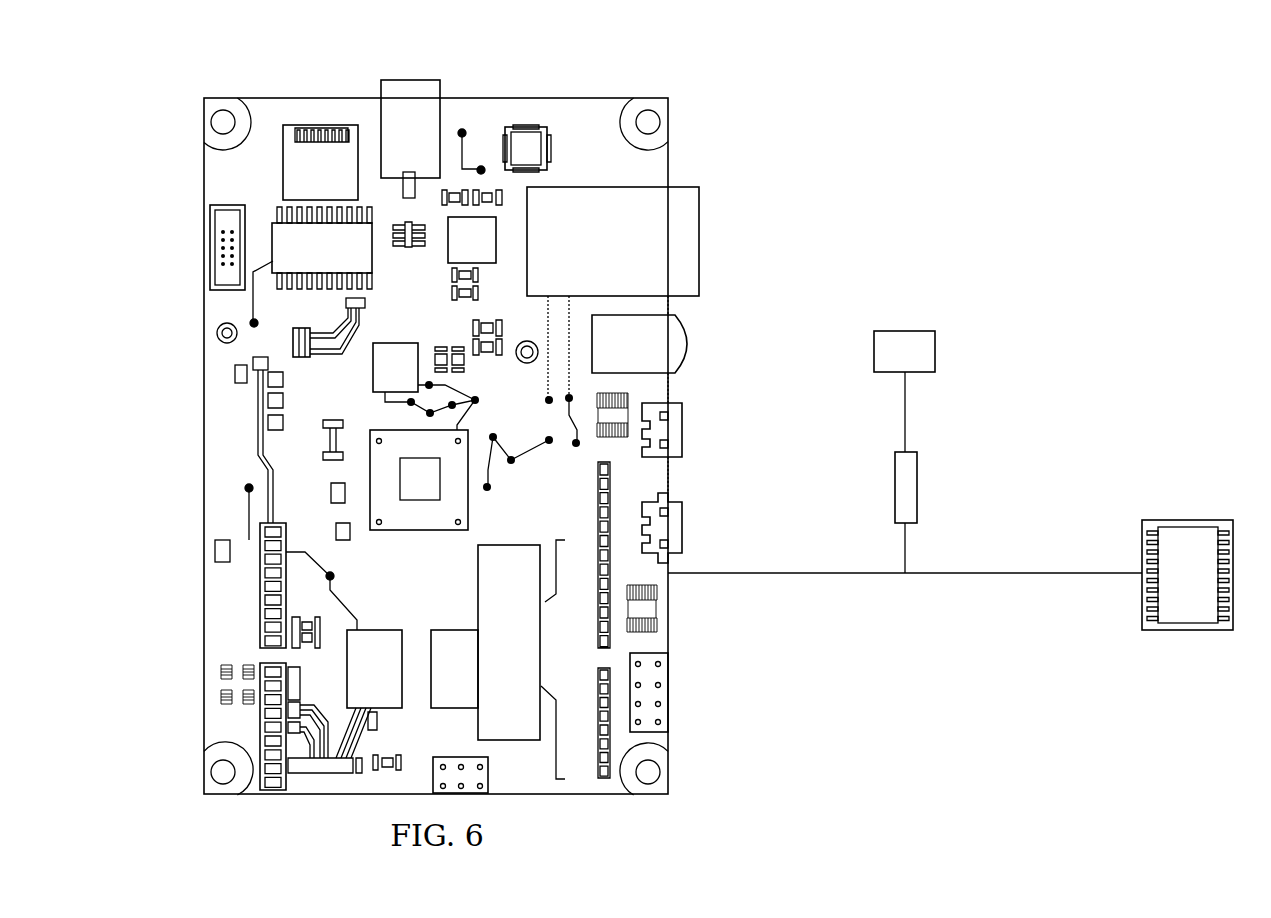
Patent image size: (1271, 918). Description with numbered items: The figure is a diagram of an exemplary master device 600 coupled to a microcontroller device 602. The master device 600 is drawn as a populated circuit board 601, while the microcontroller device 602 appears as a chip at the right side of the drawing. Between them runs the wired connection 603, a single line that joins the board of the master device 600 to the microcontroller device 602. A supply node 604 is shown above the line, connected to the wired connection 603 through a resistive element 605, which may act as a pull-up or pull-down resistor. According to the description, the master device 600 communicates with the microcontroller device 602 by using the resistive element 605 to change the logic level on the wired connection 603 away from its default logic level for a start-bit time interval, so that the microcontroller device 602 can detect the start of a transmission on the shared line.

The master device 600 is at (853, 124).
The printed circuit board 601 is at (319, 93).
The microcontroller device 602 is at (1187, 630).
The wired connection 603 is at (1023, 573).
The supply voltage Vdd 604 is at (915, 328).
The resistive element 605 is at (893, 487).